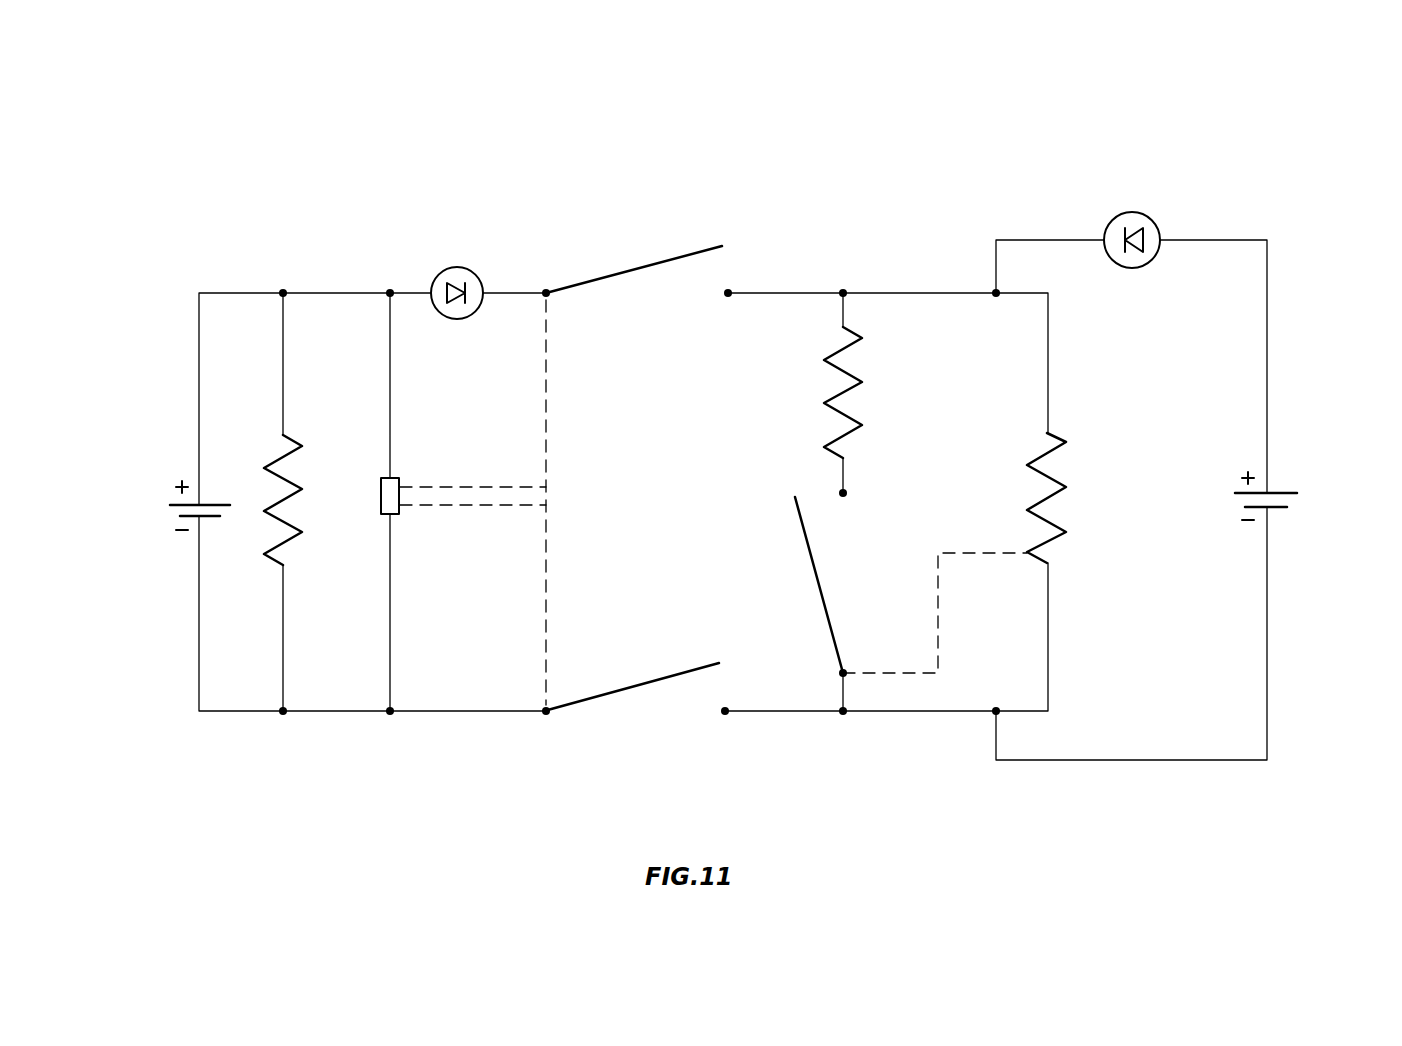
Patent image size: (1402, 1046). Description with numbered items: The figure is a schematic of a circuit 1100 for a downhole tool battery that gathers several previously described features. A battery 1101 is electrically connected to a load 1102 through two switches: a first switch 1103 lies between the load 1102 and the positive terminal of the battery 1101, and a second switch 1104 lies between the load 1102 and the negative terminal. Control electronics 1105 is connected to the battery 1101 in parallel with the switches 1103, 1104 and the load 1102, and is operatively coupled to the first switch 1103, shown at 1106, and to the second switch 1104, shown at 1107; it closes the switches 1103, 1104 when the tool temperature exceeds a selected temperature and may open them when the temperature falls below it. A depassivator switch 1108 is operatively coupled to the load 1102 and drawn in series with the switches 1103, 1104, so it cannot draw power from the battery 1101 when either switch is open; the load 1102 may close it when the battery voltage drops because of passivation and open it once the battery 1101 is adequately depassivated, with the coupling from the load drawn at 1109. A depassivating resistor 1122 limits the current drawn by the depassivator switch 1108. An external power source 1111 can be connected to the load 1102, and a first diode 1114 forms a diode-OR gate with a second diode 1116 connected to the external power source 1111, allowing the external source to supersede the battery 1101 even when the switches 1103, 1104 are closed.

The circuit 1100 is at (168, 176).
The battery 1101 is at (170, 507).
The load 1102 is at (1055, 436).
The first switch 1103 is at (692, 250).
The second switch 1104 is at (627, 690).
The control electronics 1105 is at (400, 513).
The operative coupling to the first switch 1106 is at (546, 390).
The operative coupling to the second switch 1107 is at (546, 553).
The depassivator switch 1108 is at (812, 577).
The mechanical linkage 1109 is at (938, 600).
The external power source 1111 is at (1280, 508).
The first diode 1114 is at (470, 268).
The second diode 1116 is at (1147, 215).
The depassivating resistor 1122 is at (290, 433).